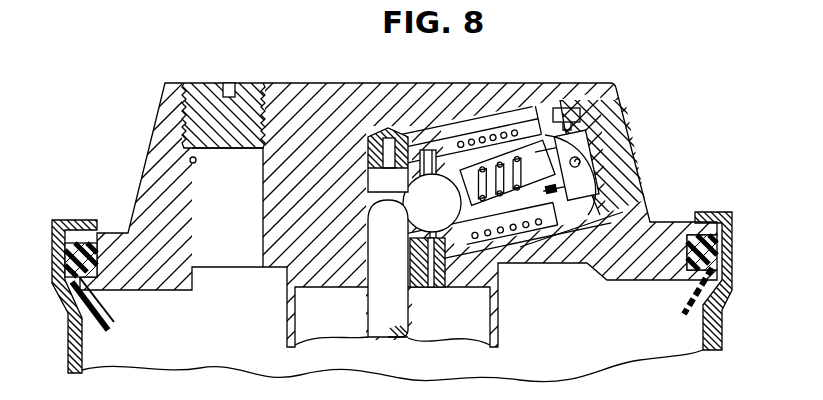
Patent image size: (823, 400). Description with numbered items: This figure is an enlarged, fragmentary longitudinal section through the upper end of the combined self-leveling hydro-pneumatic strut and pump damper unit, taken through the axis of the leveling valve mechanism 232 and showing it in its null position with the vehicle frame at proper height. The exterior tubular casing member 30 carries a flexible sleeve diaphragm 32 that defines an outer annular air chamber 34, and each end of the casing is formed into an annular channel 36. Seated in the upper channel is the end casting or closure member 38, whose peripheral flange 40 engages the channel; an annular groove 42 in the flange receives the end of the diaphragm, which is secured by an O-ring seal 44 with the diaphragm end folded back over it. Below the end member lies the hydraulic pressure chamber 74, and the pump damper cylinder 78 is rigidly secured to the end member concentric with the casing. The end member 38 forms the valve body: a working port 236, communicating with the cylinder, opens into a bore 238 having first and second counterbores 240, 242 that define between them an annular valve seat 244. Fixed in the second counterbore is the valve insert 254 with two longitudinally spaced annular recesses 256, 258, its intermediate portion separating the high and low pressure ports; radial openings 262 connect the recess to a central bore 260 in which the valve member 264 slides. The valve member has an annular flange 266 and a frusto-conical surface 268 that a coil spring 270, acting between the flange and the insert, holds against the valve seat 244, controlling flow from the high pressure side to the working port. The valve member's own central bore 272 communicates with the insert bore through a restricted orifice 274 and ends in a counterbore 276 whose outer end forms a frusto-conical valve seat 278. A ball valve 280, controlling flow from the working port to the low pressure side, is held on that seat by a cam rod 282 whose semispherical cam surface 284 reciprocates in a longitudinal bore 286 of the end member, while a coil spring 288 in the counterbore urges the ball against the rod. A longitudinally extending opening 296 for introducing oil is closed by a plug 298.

The casing member 30 is at (713, 332).
The sleeve diaphragm 32 is at (114, 334).
The outer annular air chamber 34 is at (70, 347).
The annular channel 36 is at (62, 245).
The end casting or closure member 38 is at (357, 92).
The peripheral flange 40 is at (117, 247).
The annular groove 42 is at (83, 257).
The O-ring seal 44 is at (77, 257).
The hydraulic pressure chamber 74 is at (233, 325).
The cylinder 78 is at (473, 343).
The leveling valve mechanism 232 is at (619, 98).
The working port 236 is at (440, 272).
The bore 238 is at (389, 268).
The first counterbore 240 is at (423, 153).
The second counterbore 242 is at (535, 128).
The annular valve seat 244 is at (455, 248).
The valve insert 254 is at (607, 122).
The annular recess 256 is at (476, 143).
The annular recess 258 is at (563, 108).
The central bore 260 is at (513, 252).
The radial openings 262 is at (573, 162).
The valve member 264 is at (560, 225).
The annular flange 266 is at (445, 210).
The frusto-conical surface 268 is at (455, 218).
The coil spring 270 is at (468, 130).
The central bore 272 is at (537, 117).
The restricted orifice 274 is at (582, 213).
The counterbore 276 is at (458, 183).
The frusto-conical valve seat 278 is at (380, 203).
The ball valve 280 is at (396, 210).
The cam rod 282 is at (388, 310).
The semispherical cam surface 284 is at (382, 200).
The longitudinal bore 286 is at (360, 265).
The coil spring 288 is at (508, 172).
The longitudinally extending opening 296 is at (193, 160).
The plug 298 is at (247, 82).